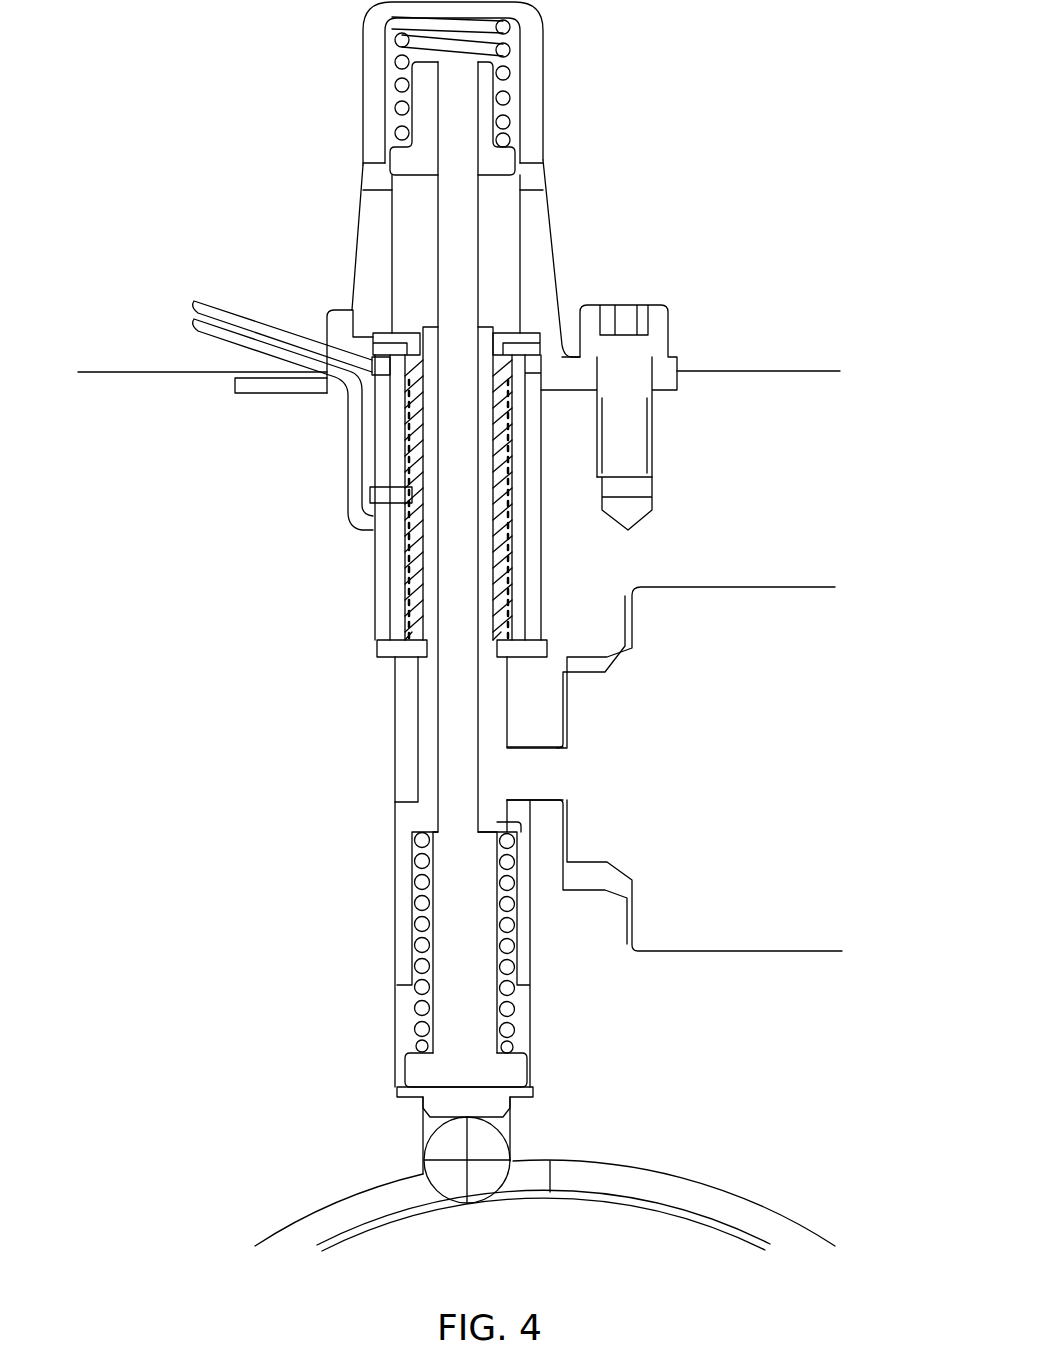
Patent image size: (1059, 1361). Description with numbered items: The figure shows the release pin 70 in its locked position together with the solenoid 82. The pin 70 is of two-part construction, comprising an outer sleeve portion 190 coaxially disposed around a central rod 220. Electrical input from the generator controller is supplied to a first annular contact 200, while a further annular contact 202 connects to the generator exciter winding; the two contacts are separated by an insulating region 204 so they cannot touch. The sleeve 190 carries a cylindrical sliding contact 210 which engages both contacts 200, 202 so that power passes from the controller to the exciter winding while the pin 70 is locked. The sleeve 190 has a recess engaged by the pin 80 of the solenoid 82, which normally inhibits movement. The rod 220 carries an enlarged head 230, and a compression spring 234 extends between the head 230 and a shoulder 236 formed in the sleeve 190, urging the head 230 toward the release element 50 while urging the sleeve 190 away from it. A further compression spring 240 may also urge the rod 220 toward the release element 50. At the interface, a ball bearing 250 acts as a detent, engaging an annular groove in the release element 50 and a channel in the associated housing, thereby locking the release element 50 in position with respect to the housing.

The release element 50 is at (352, 1228).
The release pin 70 is at (430, 769).
The pin of the solenoid 80 is at (540, 781).
The solenoid 82 is at (718, 938).
The outer sleeve portion 190 is at (405, 825).
The first annular contact 200 is at (523, 373).
The further annular contact 202 is at (398, 578).
The insulating region 204 is at (388, 498).
The cylindrical sliding contact 210 is at (510, 560).
The central rod 220 is at (450, 1010).
The enlarged head 230 is at (425, 1070).
The compression spring 234 is at (420, 934).
The shoulder 236 is at (508, 828).
The further compression spring 240 is at (512, 97).
The ball bearing 250 is at (493, 1148).